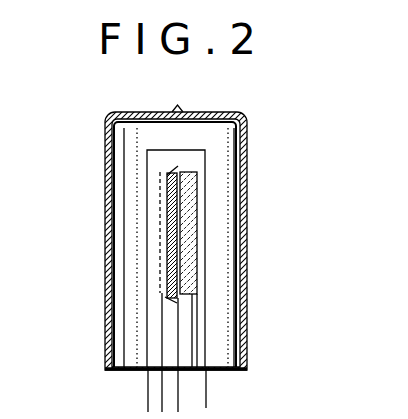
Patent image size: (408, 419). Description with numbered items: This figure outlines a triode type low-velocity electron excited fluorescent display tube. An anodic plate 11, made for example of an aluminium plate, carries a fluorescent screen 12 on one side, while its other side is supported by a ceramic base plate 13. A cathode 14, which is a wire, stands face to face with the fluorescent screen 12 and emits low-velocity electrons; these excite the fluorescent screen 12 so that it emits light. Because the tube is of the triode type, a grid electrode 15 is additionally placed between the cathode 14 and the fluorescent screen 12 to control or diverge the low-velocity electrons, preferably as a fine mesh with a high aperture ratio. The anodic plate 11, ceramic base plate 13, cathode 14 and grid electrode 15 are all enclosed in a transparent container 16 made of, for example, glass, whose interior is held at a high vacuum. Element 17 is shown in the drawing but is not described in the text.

The anodic plate 11 is at (165, 297).
The fluorescent screen 12 is at (167, 248).
The ceramic base plate 13 is at (192, 253).
The cathode 14 is at (147, 200).
The grid electrode 15 is at (159, 182).
The transparent container 16 is at (245, 208).
The inner liner 17 is at (208, 139).